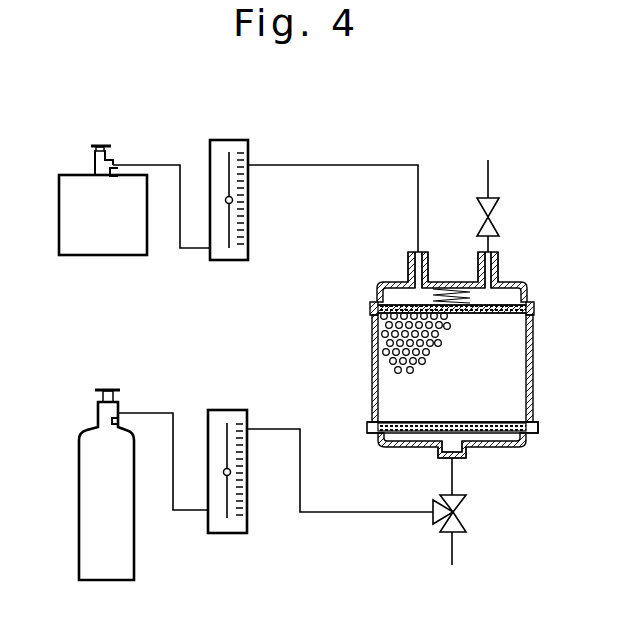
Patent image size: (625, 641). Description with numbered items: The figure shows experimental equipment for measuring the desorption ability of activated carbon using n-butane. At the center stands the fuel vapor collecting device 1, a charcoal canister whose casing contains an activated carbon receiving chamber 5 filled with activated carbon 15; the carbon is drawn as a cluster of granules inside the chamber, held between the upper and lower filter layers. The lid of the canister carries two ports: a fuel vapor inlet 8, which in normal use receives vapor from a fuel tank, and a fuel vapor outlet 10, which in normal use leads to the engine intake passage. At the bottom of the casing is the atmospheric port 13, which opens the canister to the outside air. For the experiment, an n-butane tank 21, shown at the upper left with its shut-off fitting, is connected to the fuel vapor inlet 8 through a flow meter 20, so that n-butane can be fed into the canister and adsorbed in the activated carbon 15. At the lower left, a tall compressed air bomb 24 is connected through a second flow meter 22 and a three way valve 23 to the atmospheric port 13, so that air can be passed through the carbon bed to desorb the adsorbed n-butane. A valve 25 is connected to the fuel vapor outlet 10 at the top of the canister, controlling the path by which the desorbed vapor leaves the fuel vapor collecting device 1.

The fuel vapor collecting device 1 is at (538, 346).
The activated carbon receiving chamber 5 is at (515, 389).
The fuel vapor inlet 8 is at (411, 262).
The fuel vapor outlet 10 is at (492, 266).
The atmospheric port 13 is at (462, 452).
The activated carbon 15 is at (385, 345).
The flow meter 20 is at (240, 148).
The n-butane tank 21 is at (70, 180).
The flow meter 22 is at (236, 411).
The three way valve 23 is at (466, 527).
The compressed air bomb 24 is at (82, 478).
The valve 25 is at (499, 220).